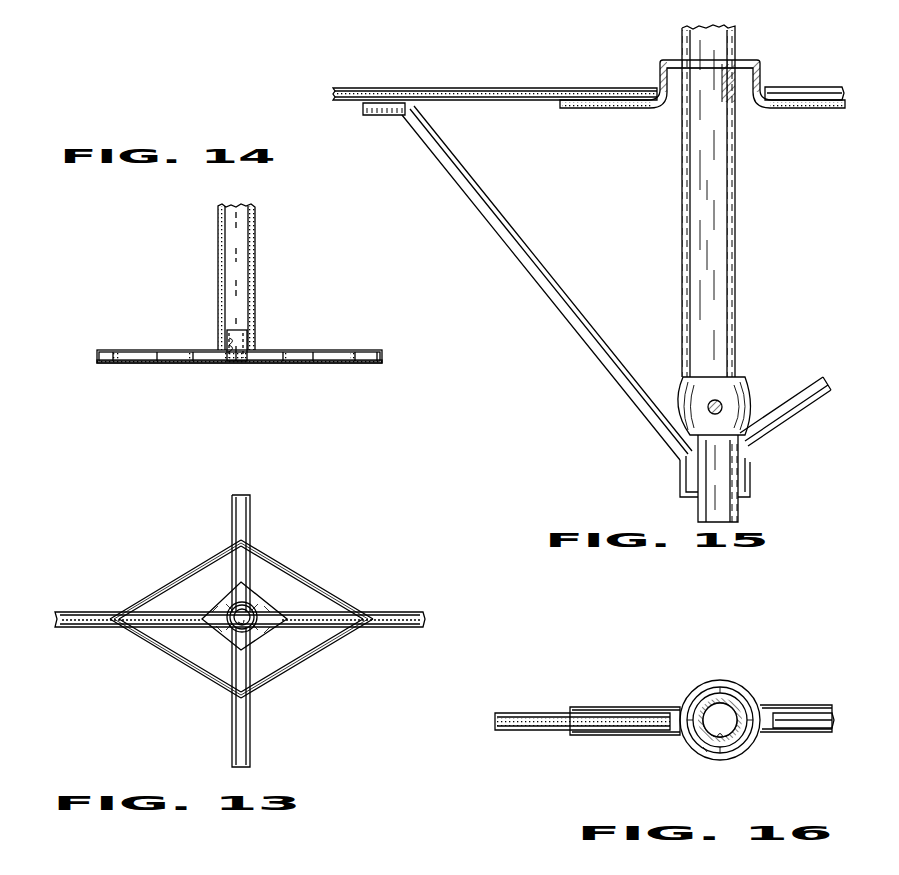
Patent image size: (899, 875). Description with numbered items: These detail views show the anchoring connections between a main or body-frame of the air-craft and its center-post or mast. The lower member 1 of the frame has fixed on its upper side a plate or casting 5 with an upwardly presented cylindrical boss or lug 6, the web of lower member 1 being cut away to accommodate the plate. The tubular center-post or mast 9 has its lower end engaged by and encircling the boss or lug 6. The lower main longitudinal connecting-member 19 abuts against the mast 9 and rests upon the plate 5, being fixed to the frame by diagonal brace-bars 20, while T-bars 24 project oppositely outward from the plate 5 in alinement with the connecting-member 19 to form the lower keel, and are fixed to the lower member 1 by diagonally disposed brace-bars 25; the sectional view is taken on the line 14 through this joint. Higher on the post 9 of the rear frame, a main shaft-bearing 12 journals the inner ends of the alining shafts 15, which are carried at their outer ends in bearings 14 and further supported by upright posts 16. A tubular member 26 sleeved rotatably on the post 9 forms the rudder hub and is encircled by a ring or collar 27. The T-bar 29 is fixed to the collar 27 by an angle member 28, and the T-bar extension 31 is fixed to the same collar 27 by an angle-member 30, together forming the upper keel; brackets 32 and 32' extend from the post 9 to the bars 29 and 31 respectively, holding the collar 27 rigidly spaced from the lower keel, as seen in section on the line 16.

In FIG. 14, the lower member 1 is at (368, 352).
In FIG. 13, the lower member 1 is at (418, 613).
In FIG. 14, the plate or casting 5 is at (265, 355).
In FIG. 13, the plate or casting 5 is at (253, 595).
In FIG. 14, the boss or lug 6 is at (255, 332).
In FIG. 13, the boss or lug 6 is at (257, 637).
In FIG. 14, the center-post or mast 9 is at (240, 277).
In FIG. 13, the center-post or mast 9 is at (227, 637).
In FIG. 15, the center-post or mast 9 is at (723, 505).
In FIG. 16, the center-post or mast 9 is at (707, 752).
In FIG. 15, the main shaft-bearing 12 is at (730, 388).
In FIG. 16, the main shaft-bearing 12 is at (720, 760).
In FIG. 13, the bearings 14 is at (405, 634).
In FIG. 15, the alining shafts 15 is at (710, 417).
In FIG. 15, the upright bearing-members or posts 16 is at (802, 63).
In FIG. 14, the lower main longitudinal connecting-member 19 is at (240, 365).
In FIG. 13, the lower main longitudinal connecting-member 19 is at (246, 522).
In FIG. 14, the diagonal or brace-bars 20 is at (285, 363).
In FIG. 13, the diagonal or brace-bars 20 is at (318, 553).
In FIG. 13, the T-bars 24 is at (249, 737).
In FIG. 14, the diagonally disposed brace-bars 25 is at (335, 363).
In FIG. 13, the diagonally disposed brace-bars 25 is at (312, 670).
In FIG. 15, the tubular member 26 is at (715, 278).
In FIG. 16, the tubular member 26 is at (743, 708).
In FIG. 15, the ring or collar 27 is at (728, 90).
In FIG. 16, the ring or collar 27 is at (750, 755).
In FIG. 15, the angle member 28 is at (760, 70).
In FIG. 16, the angle member 28 is at (770, 732).
In FIG. 15, the T-bar 29 is at (817, 90).
In FIG. 16, the T-bar 29 is at (810, 723).
In FIG. 15, the angle-member 30 is at (640, 108).
In FIG. 16, the angle-member 30 is at (650, 735).
In FIG. 15, the T-bar extension 31 is at (492, 98).
In FIG. 16, the T-bar extension 31 is at (557, 730).
In FIG. 15, the bracket 32 is at (787, 437).
In FIG. 15, the bracket 32' is at (550, 301).